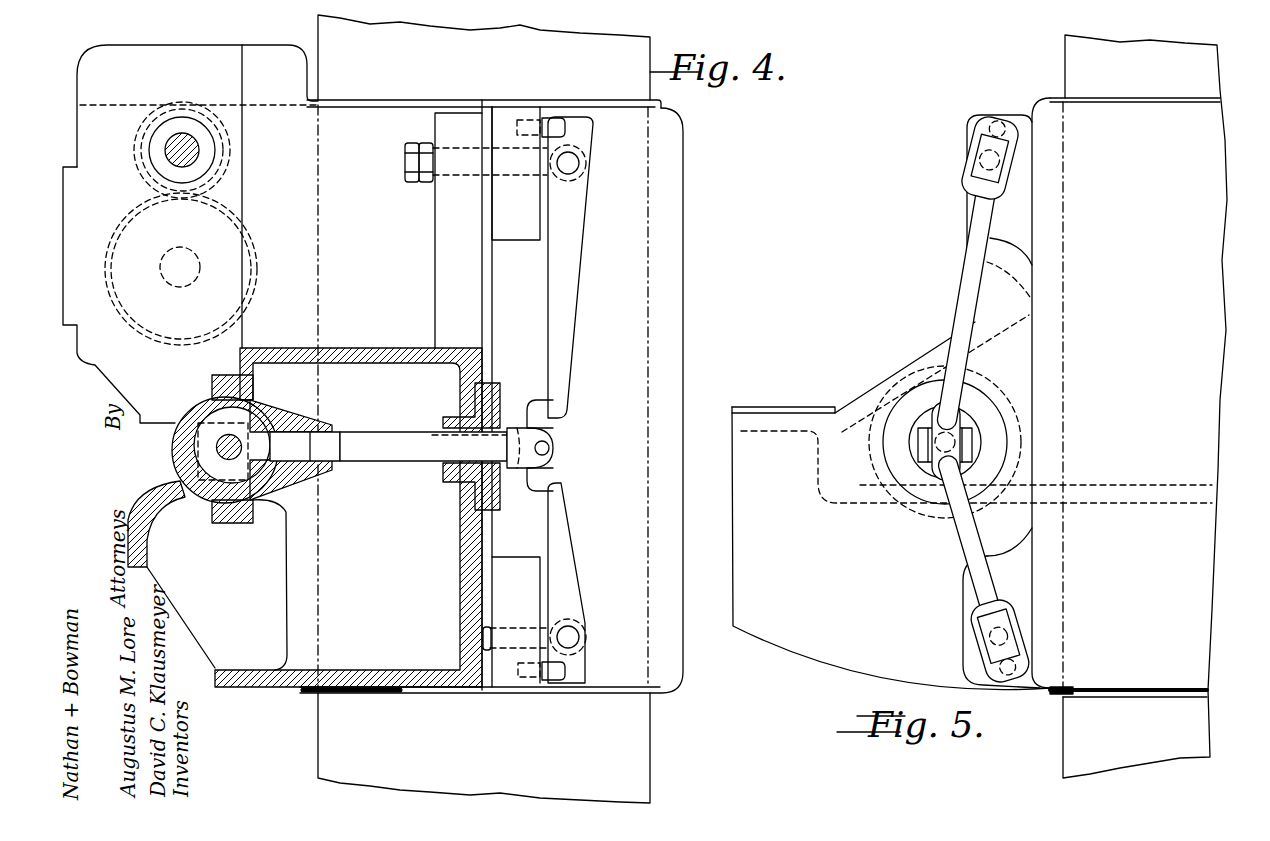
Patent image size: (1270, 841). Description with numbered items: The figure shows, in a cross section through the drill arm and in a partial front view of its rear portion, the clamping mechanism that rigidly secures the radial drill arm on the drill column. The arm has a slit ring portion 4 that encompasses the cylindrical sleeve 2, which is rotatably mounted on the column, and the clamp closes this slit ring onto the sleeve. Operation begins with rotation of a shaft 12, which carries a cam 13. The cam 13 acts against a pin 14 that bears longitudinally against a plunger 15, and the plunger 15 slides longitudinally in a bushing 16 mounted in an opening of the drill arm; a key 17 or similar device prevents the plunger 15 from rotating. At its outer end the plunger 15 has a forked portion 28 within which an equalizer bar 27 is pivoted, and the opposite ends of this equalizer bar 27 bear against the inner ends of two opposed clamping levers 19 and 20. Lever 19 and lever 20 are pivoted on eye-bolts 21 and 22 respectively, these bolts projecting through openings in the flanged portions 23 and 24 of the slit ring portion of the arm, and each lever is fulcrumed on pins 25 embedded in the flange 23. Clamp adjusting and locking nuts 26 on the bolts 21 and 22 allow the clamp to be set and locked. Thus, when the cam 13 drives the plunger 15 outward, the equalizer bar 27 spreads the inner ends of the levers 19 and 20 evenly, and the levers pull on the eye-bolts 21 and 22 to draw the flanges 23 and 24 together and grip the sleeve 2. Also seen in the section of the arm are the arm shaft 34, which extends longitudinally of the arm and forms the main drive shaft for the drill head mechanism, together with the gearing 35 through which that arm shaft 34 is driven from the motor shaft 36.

In FIG. 4, the cylindrical sleeve 2 is at (484, 409).
In FIG. 5, the cylindrical sleeve 2 is at (1073, 67).
In FIG. 4, the slit ring portion 4 is at (673, 157).
In FIG. 5, the slit ring portion 4 is at (1133, 105).
In FIG. 4, the shaft 12 is at (217, 445).
In FIG. 4, the cam 13 is at (262, 445).
In FIG. 4, the pin 14 is at (295, 442).
In FIG. 4, the plunger 15 is at (368, 434).
In FIG. 4, the bushing 16 is at (447, 480).
In FIG. 4, the key 17 is at (448, 418).
In FIG. 5, the key 17 is at (993, 448).
In FIG. 4, the clamping lever 19 is at (573, 598).
In FIG. 4, the clamping lever 20 is at (573, 252).
In FIG. 5, the clamping lever 20 is at (963, 278).
In FIG. 4, the eye-bolt 21 is at (484, 652).
In FIG. 5, the eye-bolt 21 is at (968, 543).
In FIG. 4, the eye-bolt 22 is at (464, 167).
In FIG. 4, the flanged portion 23 is at (508, 123).
In FIG. 5, the flanged portion 23 is at (965, 142).
In FIG. 4, the flanged portion 24 is at (450, 122).
In FIG. 4, the pin 25 is at (553, 122).
In FIG. 5, the pin 25 is at (997, 118).
In FIG. 4, the clamp adjusting and locking nut 26 is at (425, 146).
In FIG. 4, the equalizer bar 27 is at (538, 405).
In FIG. 5, the equalizer bar 27 is at (950, 422).
In FIG. 4, the forked portion 28 is at (552, 448).
In FIG. 5, the forked portion 28 is at (922, 438).
In FIG. 4, the arm shaft 34 is at (188, 252).
In FIG. 4, the gearing 35 is at (147, 200).
In FIG. 4, the motor shaft 36 is at (200, 150).